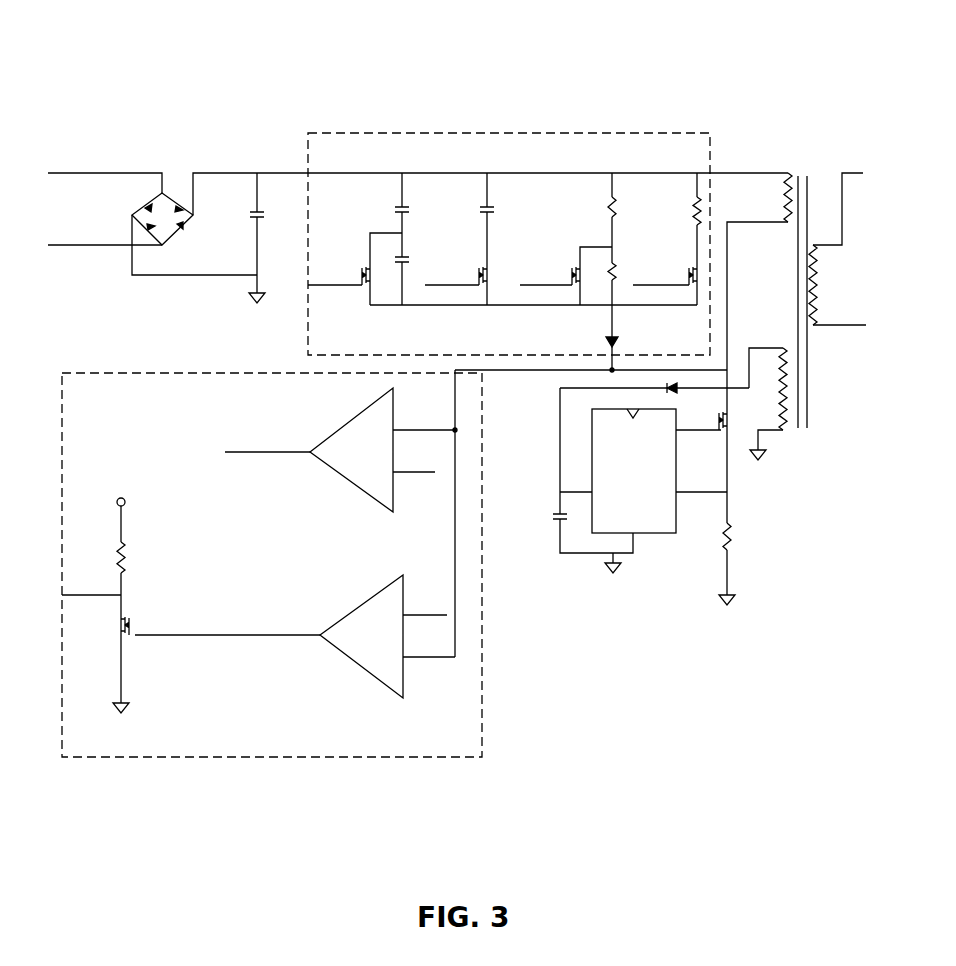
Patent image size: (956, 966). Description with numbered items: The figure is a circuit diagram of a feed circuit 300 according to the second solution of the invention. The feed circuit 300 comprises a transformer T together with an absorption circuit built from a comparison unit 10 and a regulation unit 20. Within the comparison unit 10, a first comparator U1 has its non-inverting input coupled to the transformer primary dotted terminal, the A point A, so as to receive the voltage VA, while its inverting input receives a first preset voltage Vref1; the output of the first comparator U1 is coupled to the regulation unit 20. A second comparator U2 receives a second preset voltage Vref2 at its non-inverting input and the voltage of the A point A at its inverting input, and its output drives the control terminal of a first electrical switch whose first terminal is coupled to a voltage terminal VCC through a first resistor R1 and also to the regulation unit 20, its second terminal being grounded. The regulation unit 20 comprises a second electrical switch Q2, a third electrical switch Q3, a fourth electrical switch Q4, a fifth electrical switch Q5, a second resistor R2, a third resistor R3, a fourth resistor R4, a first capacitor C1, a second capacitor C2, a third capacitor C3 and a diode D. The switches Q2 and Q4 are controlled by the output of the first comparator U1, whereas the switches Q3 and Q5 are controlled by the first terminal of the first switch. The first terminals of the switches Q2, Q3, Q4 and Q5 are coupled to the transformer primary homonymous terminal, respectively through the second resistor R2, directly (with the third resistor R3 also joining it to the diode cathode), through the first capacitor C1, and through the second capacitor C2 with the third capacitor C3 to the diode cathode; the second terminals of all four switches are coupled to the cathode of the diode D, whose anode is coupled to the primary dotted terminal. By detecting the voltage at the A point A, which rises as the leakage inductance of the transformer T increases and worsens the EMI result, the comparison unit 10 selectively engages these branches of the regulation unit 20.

The feed circuit 300 is at (366, 72).
The regulation unit 20 is at (428, 133).
The comparison unit 10 is at (237, 758).
The transformer T is at (796, 333).
The first capacitor C1 is at (498, 239).
The second capacitor C2 is at (413, 203).
The third capacitor C3 is at (413, 269).
The first resistor R1 is at (93, 622).
The second resistor R2 is at (680, 239).
The third resistor R3 is at (625, 218).
The fourth resistor R4 is at (622, 299).
The second electrical switch Q2 is at (665, 261).
The third electrical switch Q3 is at (566, 273).
The fourth electrical switch Q4 is at (456, 261).
The fifth electrical switch Q5 is at (355, 269).
The diode D is at (620, 353).
The first comparator U1 is at (340, 450).
The second comparator U2 is at (295, 636).
The A point A is at (464, 513).
The voltage terminal VCC is at (113, 506).
The first preset voltage Vref1 is at (415, 459).
The second preset voltage Vref2 is at (425, 603).